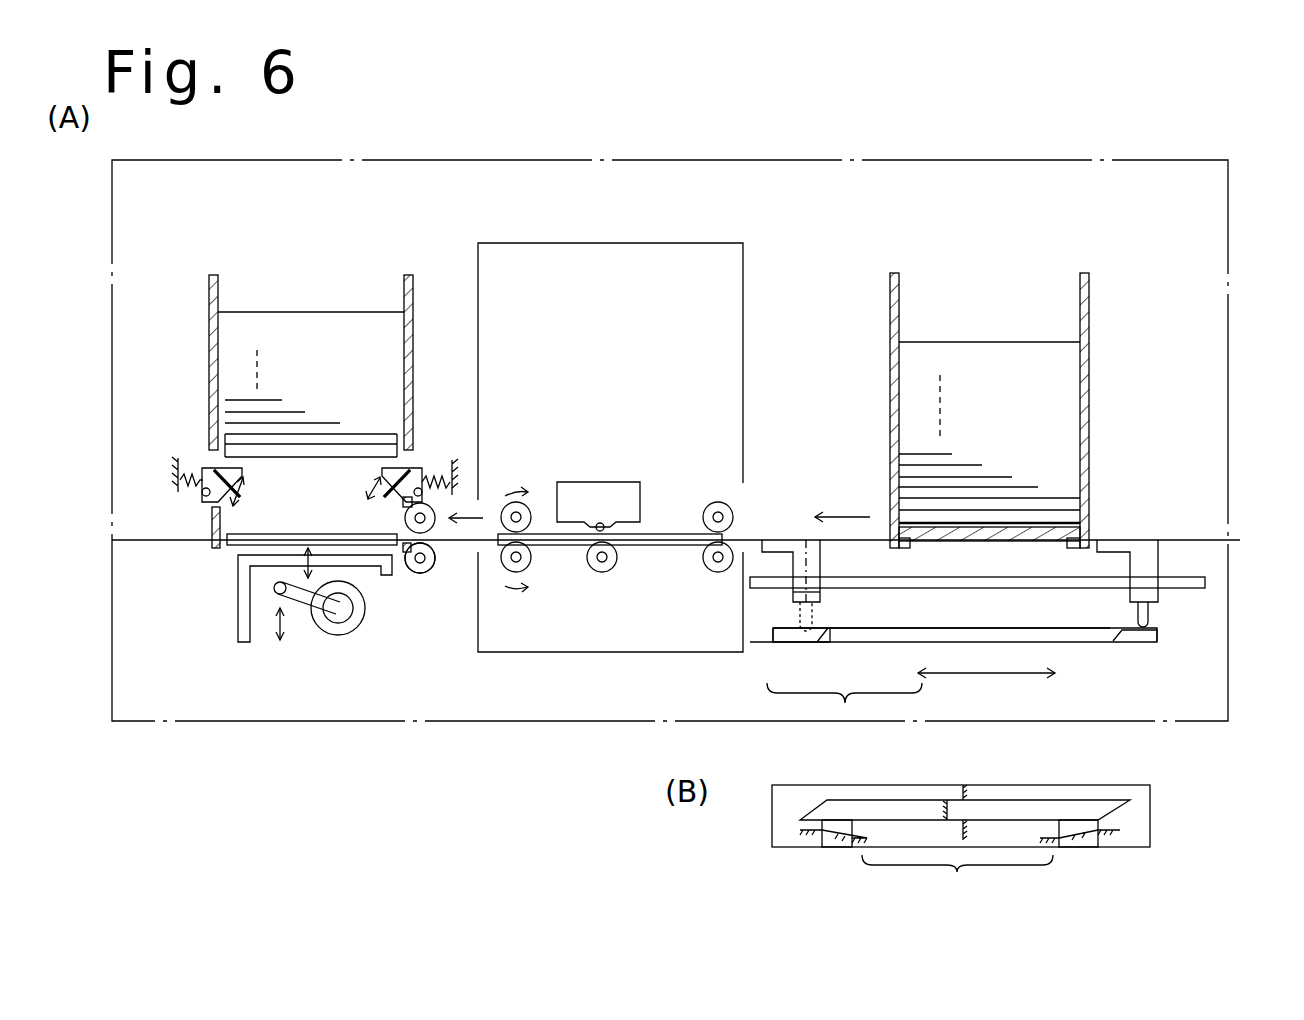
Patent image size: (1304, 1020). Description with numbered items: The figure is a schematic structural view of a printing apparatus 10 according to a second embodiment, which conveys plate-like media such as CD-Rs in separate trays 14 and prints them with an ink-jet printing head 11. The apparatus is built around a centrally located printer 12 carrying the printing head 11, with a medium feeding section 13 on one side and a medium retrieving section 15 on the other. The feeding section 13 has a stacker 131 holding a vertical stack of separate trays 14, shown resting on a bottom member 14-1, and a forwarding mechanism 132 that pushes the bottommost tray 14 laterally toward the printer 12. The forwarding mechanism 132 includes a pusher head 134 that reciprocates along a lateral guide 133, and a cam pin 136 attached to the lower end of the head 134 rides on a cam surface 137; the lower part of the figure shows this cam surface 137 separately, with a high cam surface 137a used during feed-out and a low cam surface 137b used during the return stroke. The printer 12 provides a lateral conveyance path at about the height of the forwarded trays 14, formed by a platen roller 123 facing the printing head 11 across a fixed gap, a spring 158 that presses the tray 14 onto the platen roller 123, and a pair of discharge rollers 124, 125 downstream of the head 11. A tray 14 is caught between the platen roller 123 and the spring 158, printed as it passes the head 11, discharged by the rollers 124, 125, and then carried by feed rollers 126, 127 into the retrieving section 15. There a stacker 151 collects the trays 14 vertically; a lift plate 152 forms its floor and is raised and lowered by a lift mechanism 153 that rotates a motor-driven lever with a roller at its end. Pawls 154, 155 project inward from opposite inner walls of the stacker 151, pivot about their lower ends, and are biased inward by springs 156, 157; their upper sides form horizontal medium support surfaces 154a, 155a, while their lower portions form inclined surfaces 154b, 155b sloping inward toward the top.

The printing apparatus 10 is at (808, 152).
The ink-jet printing head 11 is at (600, 482).
The printer 12 is at (752, 257).
The medium feeding section 13 is at (1105, 315).
The separate tray 14 is at (1057, 425).
The stacker bottom plate 14-1 is at (1035, 536).
The medium retrieving section 15 is at (385, 273).
The platen roller 123 is at (602, 575).
The discharge roller 124 is at (512, 495).
The discharge roller 125 is at (508, 573).
The feed roller 126 is at (423, 502).
The feed roller 127 is at (365, 570).
The stacker 131 is at (1085, 460).
The forwarding mechanism 132 is at (1148, 612).
The lateral guide 133 is at (1028, 588).
The pusher head 134 is at (1150, 565).
The cam pin 136 is at (1155, 632).
The cam surface 137 is at (953, 675).
The high cam surface 137a is at (840, 628).
The low cam surface 137b is at (940, 640).
The stacker 151 is at (218, 310).
The lift plate 152 is at (345, 632).
The lift mechanism 153 is at (312, 636).
The pawl 154 is at (418, 462).
The medium support surface 154a is at (387, 468).
The inclined surface 154b is at (410, 572).
The pawl 155 is at (213, 468).
The medium support surface 155a is at (217, 466).
The inclined surface 155b is at (212, 508).
The spring 156 is at (432, 465).
The spring 157 is at (203, 470).
The spring 158 is at (600, 524).